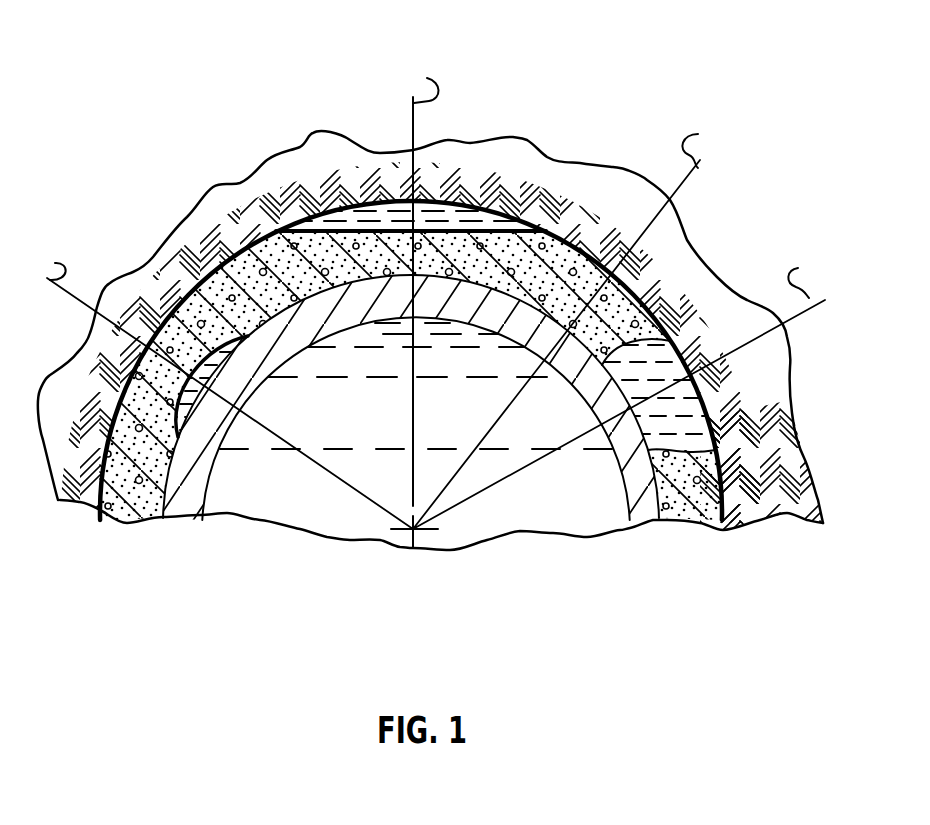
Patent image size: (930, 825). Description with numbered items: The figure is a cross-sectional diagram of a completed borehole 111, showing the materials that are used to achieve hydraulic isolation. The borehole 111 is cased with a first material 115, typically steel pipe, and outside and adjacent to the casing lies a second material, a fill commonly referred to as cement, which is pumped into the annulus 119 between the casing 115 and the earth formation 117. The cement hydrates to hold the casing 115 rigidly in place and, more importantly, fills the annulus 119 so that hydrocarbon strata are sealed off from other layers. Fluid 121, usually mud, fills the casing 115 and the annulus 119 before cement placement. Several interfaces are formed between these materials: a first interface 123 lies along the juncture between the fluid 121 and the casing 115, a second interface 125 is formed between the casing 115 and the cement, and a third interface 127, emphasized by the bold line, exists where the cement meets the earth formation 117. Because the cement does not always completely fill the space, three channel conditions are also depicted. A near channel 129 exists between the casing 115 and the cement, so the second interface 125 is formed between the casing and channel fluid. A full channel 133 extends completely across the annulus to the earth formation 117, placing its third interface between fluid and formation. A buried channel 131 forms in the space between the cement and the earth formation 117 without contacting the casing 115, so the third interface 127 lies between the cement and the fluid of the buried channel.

The borehole 111 is at (655, 85).
The first material 115 is at (195, 488).
The earth formation 117 is at (708, 287).
The annulus 119 is at (700, 512).
The fluid 121 is at (535, 515).
The first interface 123 is at (208, 524).
The second interface 125 is at (170, 534).
The third interface 127 is at (100, 530).
The near channel 129 is at (214, 368).
The buried channel 131 is at (365, 212).
The full channel 133 is at (666, 410).